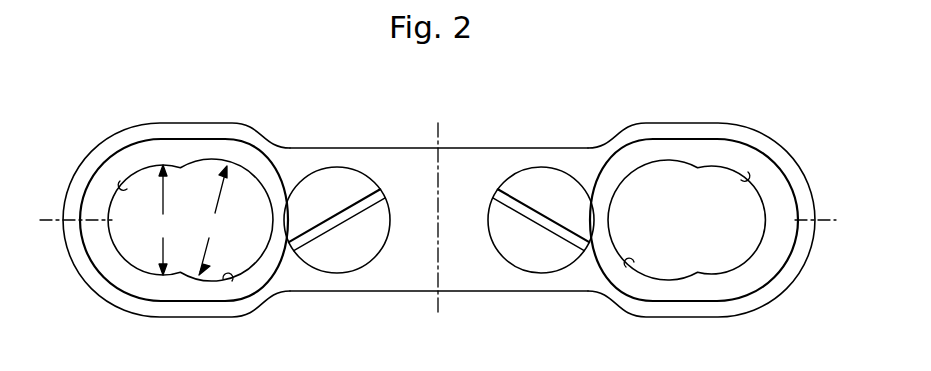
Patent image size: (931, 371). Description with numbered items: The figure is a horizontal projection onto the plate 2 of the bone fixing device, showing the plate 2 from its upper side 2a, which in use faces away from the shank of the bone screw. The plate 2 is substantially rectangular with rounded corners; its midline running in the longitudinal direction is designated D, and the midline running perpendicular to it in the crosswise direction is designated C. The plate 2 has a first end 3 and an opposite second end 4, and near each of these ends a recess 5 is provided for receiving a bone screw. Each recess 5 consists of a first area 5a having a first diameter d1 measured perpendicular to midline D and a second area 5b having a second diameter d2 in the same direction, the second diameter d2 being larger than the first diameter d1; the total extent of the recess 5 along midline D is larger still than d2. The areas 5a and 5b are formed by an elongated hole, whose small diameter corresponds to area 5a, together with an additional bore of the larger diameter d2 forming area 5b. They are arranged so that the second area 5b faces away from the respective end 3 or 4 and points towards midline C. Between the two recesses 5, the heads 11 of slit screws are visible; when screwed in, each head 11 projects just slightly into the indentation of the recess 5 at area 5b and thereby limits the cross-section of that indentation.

The plate 2 is at (438, 242).
The upper side of the plate 2a is at (388, 262).
The first end 3 is at (63, 218).
The second end 4 is at (817, 221).
The recess 5 is at (128, 247).
The first area of the recess 5a is at (126, 183).
The second area of the recess 5b is at (231, 280).
The head of the screw 11 is at (323, 180).
The crosswise midline C is at (440, 135).
The longitudinal midline D is at (50, 224).
The first diameter d1 is at (167, 220).
The second diameter d2 is at (216, 220).